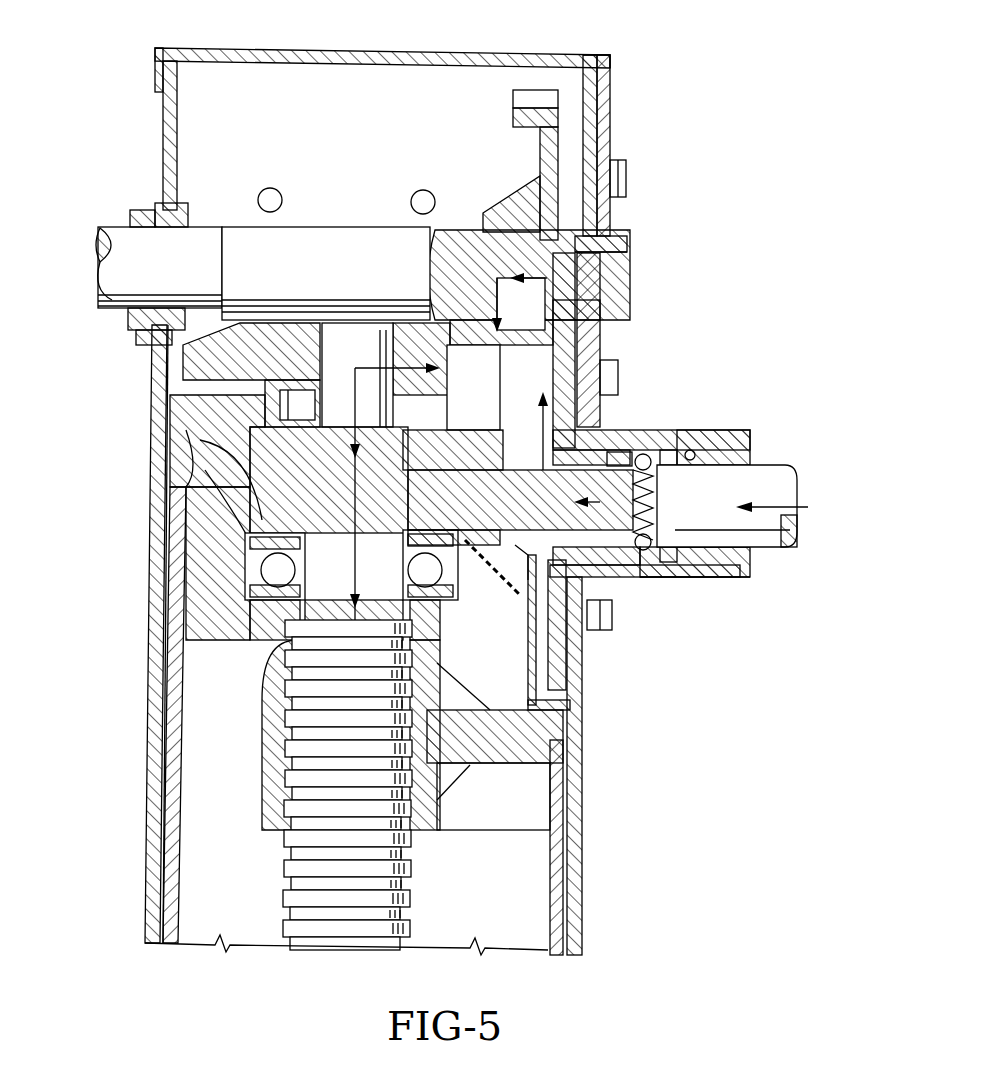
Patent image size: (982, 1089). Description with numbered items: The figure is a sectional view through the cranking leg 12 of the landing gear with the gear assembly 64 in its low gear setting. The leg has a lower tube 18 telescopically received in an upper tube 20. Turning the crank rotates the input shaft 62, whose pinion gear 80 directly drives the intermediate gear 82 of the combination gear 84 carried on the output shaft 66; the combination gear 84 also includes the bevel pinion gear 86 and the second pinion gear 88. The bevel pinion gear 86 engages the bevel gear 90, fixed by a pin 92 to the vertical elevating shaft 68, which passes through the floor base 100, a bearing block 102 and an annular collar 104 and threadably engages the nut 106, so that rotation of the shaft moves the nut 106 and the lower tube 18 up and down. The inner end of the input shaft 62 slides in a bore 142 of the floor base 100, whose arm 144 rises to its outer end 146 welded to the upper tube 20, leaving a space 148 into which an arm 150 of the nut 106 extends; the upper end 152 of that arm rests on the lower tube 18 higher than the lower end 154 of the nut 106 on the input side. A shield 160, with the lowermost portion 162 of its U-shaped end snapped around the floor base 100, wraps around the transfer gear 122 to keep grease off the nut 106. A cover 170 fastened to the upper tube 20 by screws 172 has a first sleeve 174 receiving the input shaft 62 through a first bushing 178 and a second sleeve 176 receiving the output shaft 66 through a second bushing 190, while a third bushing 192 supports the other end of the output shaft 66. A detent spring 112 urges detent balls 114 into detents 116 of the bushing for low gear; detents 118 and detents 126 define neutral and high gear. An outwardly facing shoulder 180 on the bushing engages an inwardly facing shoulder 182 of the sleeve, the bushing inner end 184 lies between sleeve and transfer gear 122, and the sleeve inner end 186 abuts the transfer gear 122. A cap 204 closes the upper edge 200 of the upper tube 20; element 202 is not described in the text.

The cranking leg 12 is at (138, 828).
The lower tube 18 is at (168, 870).
The upper tube 20 is at (150, 912).
The input shaft 62 is at (790, 488).
The gear assembly 64 is at (500, 165).
The output shaft 66 is at (108, 285).
The vertical elevating shaft 68 is at (298, 888).
The pinion gear 80 is at (535, 520).
The intermediate gear 82 is at (553, 153).
The combination gear 84 is at (515, 258).
The bevel pinion gear 86 is at (512, 205).
The second pinion gear 88 is at (568, 240).
The bevel gear 90 is at (217, 362).
The pin 92 is at (293, 407).
The floor base 100 is at (278, 508).
The bearing block 102 is at (238, 594).
The annular collar 104 is at (265, 630).
The nut 106 is at (266, 778).
The detent spring 112 is at (650, 490).
The detent balls 114 is at (655, 440).
The detents 116 is at (668, 448).
The detents 118 is at (700, 440).
The transfer gear 122 is at (556, 668).
The detents 126 is at (750, 447).
The bore 142 is at (375, 495).
The arm 144 is at (250, 453).
The outer end 146 is at (473, 417).
The space 148 is at (227, 472).
The arm 150 is at (197, 585).
The upper end 152 is at (180, 457).
The lower end 154 is at (556, 728).
The shield 160 is at (530, 656).
The lowermost portion 162 is at (476, 546).
The cover 170 is at (620, 122).
The screws 172 is at (620, 174).
The first sleeve 174 is at (720, 572).
The second sleeve 176 is at (622, 239).
The first bushing 178 is at (750, 566).
The outwardly facing shoulder 180 is at (692, 452).
The inwardly facing shoulder 182 is at (675, 570).
The inner end 184 is at (645, 454).
The inner end 186 is at (545, 565).
The second bushing 190 is at (628, 252).
The third bushing 192 is at (150, 212).
The upper edge 200 is at (592, 62).
The seal 202 is at (626, 312).
The cap 204 is at (276, 50).